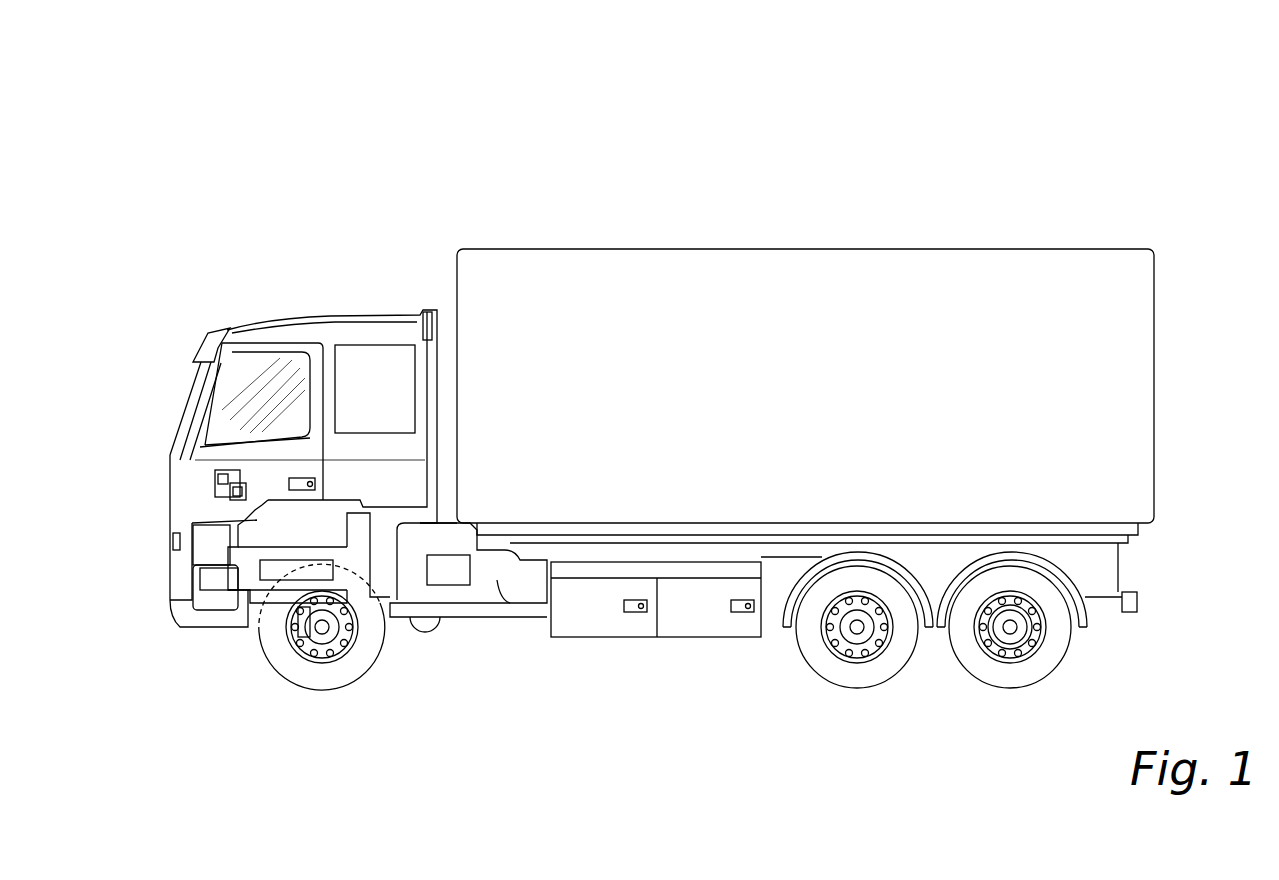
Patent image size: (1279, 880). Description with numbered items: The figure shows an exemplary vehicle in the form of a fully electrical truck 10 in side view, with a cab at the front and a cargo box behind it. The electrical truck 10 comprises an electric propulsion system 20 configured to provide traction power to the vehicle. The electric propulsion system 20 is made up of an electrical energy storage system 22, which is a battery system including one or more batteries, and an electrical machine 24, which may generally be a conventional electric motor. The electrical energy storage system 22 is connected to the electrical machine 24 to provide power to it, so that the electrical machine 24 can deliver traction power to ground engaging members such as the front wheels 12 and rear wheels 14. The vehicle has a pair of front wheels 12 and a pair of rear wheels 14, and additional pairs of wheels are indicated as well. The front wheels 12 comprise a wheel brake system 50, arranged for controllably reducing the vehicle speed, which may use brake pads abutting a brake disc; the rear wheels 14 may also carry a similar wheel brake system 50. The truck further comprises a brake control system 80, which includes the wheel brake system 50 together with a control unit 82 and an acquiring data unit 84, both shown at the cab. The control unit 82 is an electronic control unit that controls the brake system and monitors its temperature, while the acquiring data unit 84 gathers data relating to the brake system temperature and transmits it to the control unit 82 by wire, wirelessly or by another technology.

The electrical truck 10 is at (392, 186).
The front wheels 12 is at (318, 677).
The rear wheels 14 is at (850, 677).
The electric propulsion system 20 is at (270, 500).
The electrical energy storage system 22 is at (447, 568).
The electrical machine 24 is at (263, 568).
The wheel brake system 50 is at (290, 634).
The brake control system 80 is at (217, 492).
The control unit 82 is at (233, 483).
The acquiring data unit 84 is at (226, 470).